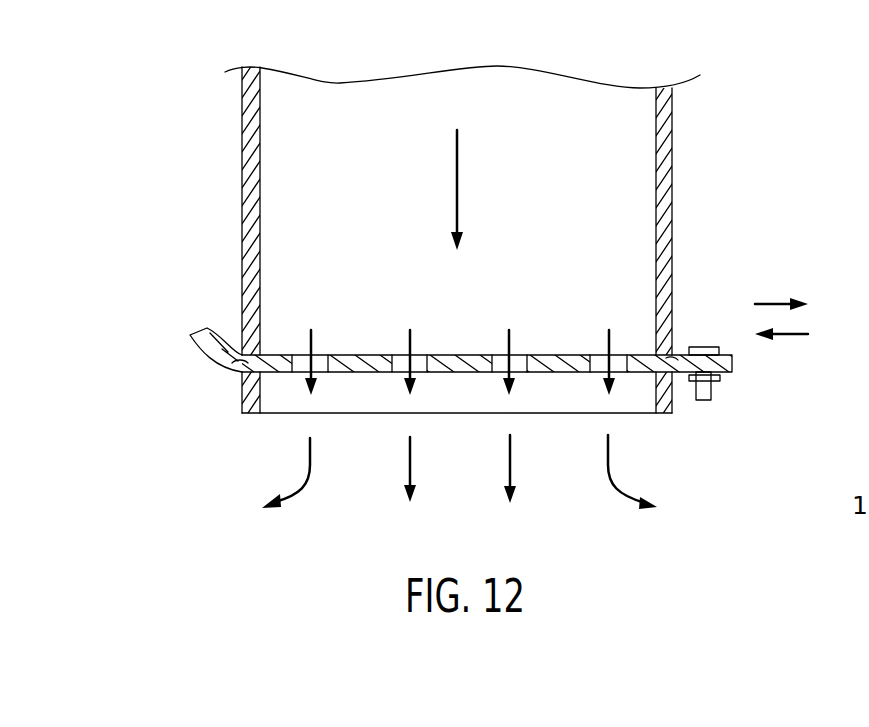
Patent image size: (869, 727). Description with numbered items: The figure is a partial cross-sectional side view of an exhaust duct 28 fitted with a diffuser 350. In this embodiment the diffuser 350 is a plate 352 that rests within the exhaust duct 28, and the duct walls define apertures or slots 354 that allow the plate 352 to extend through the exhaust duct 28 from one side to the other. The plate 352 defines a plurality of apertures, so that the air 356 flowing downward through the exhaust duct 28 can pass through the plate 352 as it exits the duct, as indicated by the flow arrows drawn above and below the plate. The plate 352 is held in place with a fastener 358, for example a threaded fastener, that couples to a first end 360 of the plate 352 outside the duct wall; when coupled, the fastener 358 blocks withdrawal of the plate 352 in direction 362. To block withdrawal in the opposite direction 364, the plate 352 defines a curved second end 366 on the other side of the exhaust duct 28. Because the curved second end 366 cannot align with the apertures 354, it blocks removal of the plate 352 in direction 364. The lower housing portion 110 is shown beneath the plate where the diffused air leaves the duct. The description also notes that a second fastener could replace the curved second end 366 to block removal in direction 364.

The exhaust duct 28 is at (253, 182).
The housing 110 is at (282, 413).
The diffuser 350 is at (210, 490).
The plate 352 is at (570, 355).
The apertures or slots 354 is at (240, 365).
The air 356 is at (457, 185).
The fastener 358 is at (703, 347).
The first end 360 is at (732, 363).
The direction 362 is at (787, 334).
The direction 364 is at (775, 304).
The curved second end 366 is at (198, 352).